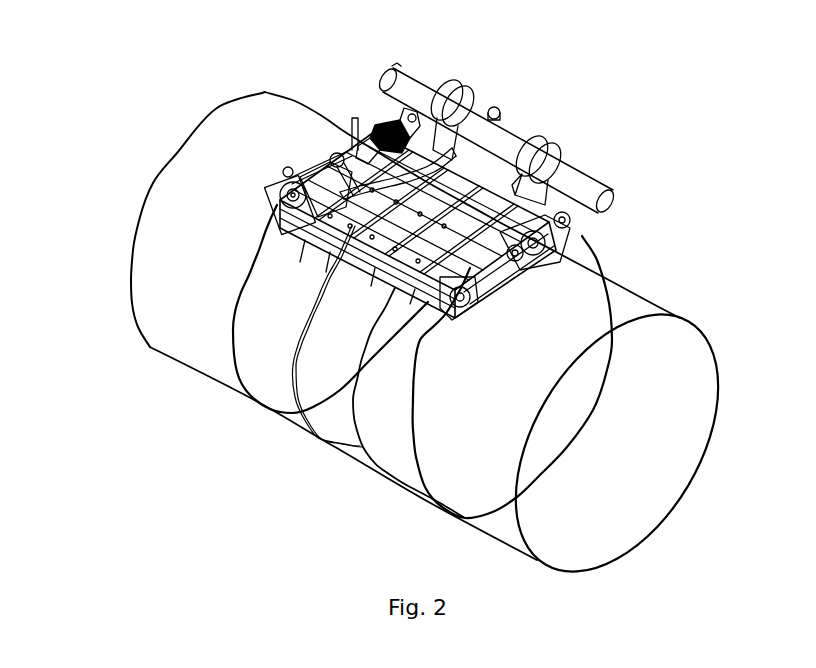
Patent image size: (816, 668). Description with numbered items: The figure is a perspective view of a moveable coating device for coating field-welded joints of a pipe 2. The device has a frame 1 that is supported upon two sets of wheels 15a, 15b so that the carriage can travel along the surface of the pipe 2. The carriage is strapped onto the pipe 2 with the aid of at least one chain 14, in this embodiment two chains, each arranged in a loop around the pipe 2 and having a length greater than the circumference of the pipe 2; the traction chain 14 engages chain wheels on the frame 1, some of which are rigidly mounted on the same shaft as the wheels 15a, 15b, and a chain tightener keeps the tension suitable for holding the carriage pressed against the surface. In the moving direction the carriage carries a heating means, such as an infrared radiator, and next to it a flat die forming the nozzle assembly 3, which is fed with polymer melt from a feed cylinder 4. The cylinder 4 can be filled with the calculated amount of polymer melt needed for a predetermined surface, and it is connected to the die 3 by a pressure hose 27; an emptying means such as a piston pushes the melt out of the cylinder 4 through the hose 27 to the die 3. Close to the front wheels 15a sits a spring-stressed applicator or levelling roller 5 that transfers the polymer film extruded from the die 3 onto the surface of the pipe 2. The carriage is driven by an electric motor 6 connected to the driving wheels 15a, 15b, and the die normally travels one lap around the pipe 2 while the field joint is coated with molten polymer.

The frame 1 is at (540, 292).
The pipe 2 is at (162, 349).
The nozzle assembly 3 is at (362, 195).
The feed cylinder 4 is at (512, 130).
The levelling roller 5 is at (363, 220).
The motor 6 is at (360, 125).
The chain 14 is at (384, 466).
The front wheels 15a is at (432, 338).
The wheels 15b is at (580, 247).
The pressure hose 27 is at (484, 104).